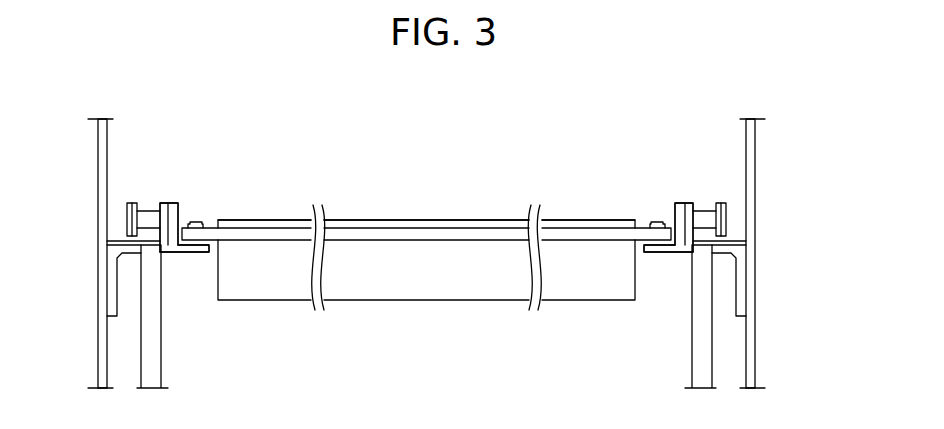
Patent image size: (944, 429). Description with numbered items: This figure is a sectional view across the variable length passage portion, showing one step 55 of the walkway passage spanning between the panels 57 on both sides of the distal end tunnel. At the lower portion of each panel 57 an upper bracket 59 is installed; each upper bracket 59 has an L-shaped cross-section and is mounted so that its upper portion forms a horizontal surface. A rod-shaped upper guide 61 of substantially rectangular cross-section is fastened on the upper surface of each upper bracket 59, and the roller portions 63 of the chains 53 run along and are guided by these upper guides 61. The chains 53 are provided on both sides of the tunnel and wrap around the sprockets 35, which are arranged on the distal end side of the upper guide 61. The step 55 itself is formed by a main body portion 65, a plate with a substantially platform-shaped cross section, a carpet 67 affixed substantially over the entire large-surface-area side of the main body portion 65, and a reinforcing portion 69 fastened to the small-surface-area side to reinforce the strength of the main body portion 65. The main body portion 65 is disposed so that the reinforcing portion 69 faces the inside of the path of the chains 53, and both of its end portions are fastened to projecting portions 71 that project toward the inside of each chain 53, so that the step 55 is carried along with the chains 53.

The sprocket 35 is at (140, 358).
The chain 53 is at (186, 184).
The step 55 is at (459, 186).
The panel 57 is at (98, 172).
The upper bracket 59 is at (117, 297).
The upper guide 61 is at (150, 237).
The roller portion 63 is at (152, 209).
The main body portion 65 is at (373, 232).
The carpet 67 is at (567, 219).
The reinforcing portion 69 is at (449, 300).
The projecting portion 71 is at (192, 250).